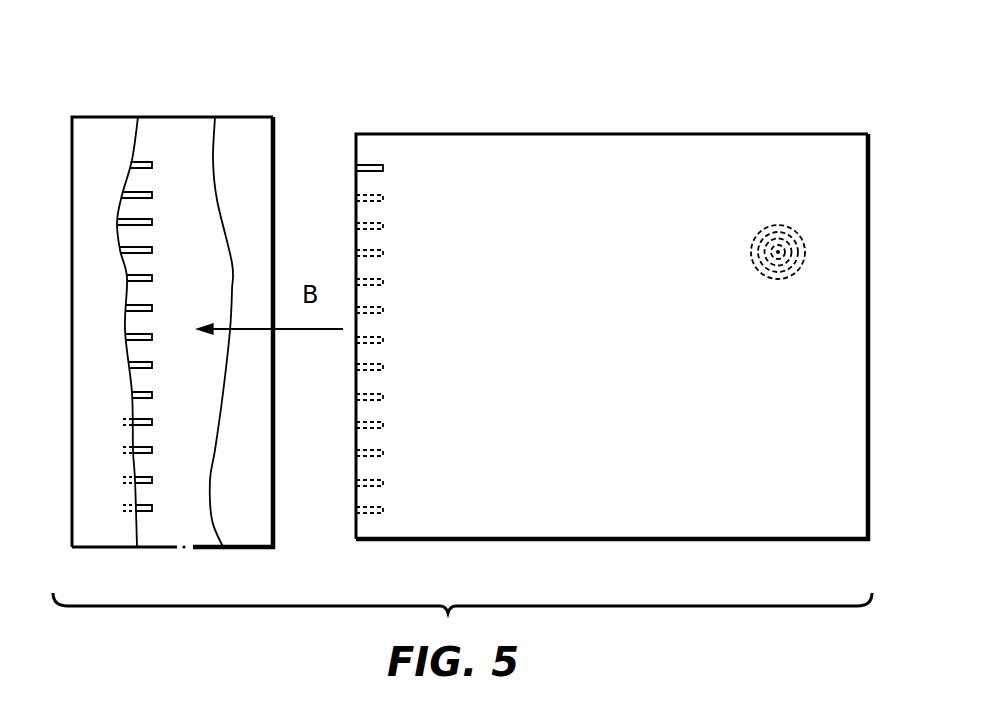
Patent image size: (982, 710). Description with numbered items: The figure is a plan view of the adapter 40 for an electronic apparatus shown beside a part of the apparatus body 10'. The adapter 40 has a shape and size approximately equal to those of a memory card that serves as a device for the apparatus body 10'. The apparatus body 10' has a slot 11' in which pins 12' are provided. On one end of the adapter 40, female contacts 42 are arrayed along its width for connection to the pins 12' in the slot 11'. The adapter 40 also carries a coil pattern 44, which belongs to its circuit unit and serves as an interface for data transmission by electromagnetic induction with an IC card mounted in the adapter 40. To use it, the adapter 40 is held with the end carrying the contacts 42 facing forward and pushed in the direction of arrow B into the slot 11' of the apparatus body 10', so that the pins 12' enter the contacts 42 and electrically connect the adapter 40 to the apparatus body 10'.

The apparatus body 10' is at (172, 294).
The slot 11' is at (175, 293).
The pins 12' is at (168, 336).
The adapter 40 is at (612, 310).
The female contacts 42 is at (380, 229).
The coil pattern 44 is at (781, 222).